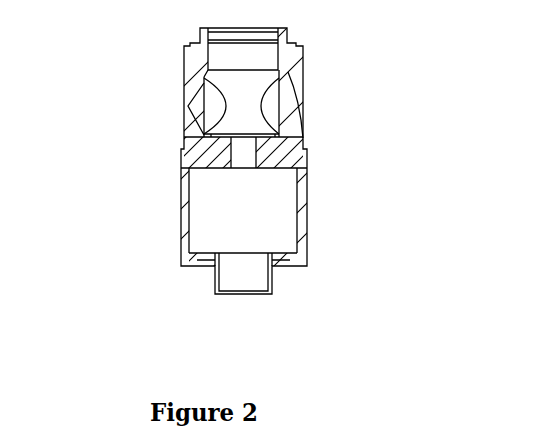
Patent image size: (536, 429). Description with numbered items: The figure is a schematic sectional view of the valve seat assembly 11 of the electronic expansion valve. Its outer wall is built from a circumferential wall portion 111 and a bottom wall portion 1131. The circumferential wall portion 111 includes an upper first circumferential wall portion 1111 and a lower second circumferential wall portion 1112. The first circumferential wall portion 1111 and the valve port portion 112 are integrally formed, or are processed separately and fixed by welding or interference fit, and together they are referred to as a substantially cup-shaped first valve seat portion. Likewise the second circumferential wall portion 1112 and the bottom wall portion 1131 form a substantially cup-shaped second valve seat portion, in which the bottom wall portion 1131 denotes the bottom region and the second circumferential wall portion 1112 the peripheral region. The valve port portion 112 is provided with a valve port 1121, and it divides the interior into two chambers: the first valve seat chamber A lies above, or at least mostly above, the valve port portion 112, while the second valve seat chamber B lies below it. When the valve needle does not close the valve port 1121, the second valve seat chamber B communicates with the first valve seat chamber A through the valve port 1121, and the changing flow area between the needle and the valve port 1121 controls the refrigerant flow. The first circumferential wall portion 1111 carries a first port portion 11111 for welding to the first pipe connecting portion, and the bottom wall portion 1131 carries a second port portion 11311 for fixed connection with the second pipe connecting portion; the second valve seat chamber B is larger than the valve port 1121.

The valve seat assembly 11 is at (163, 253).
The circumferential wall portion 111 is at (82, 150).
The first circumferential wall portion 1111 is at (188, 106).
The first port portion 11111 is at (287, 90).
The second circumferential wall portion 1112 is at (184, 195).
The valve port portion 112 is at (283, 160).
The valve port 1121 is at (247, 163).
The bottom wall portion 1131 is at (278, 260).
The second port portion 11311 is at (235, 282).
The first valve seat chamber A is at (250, 107).
The second valve seat chamber B is at (207, 240).